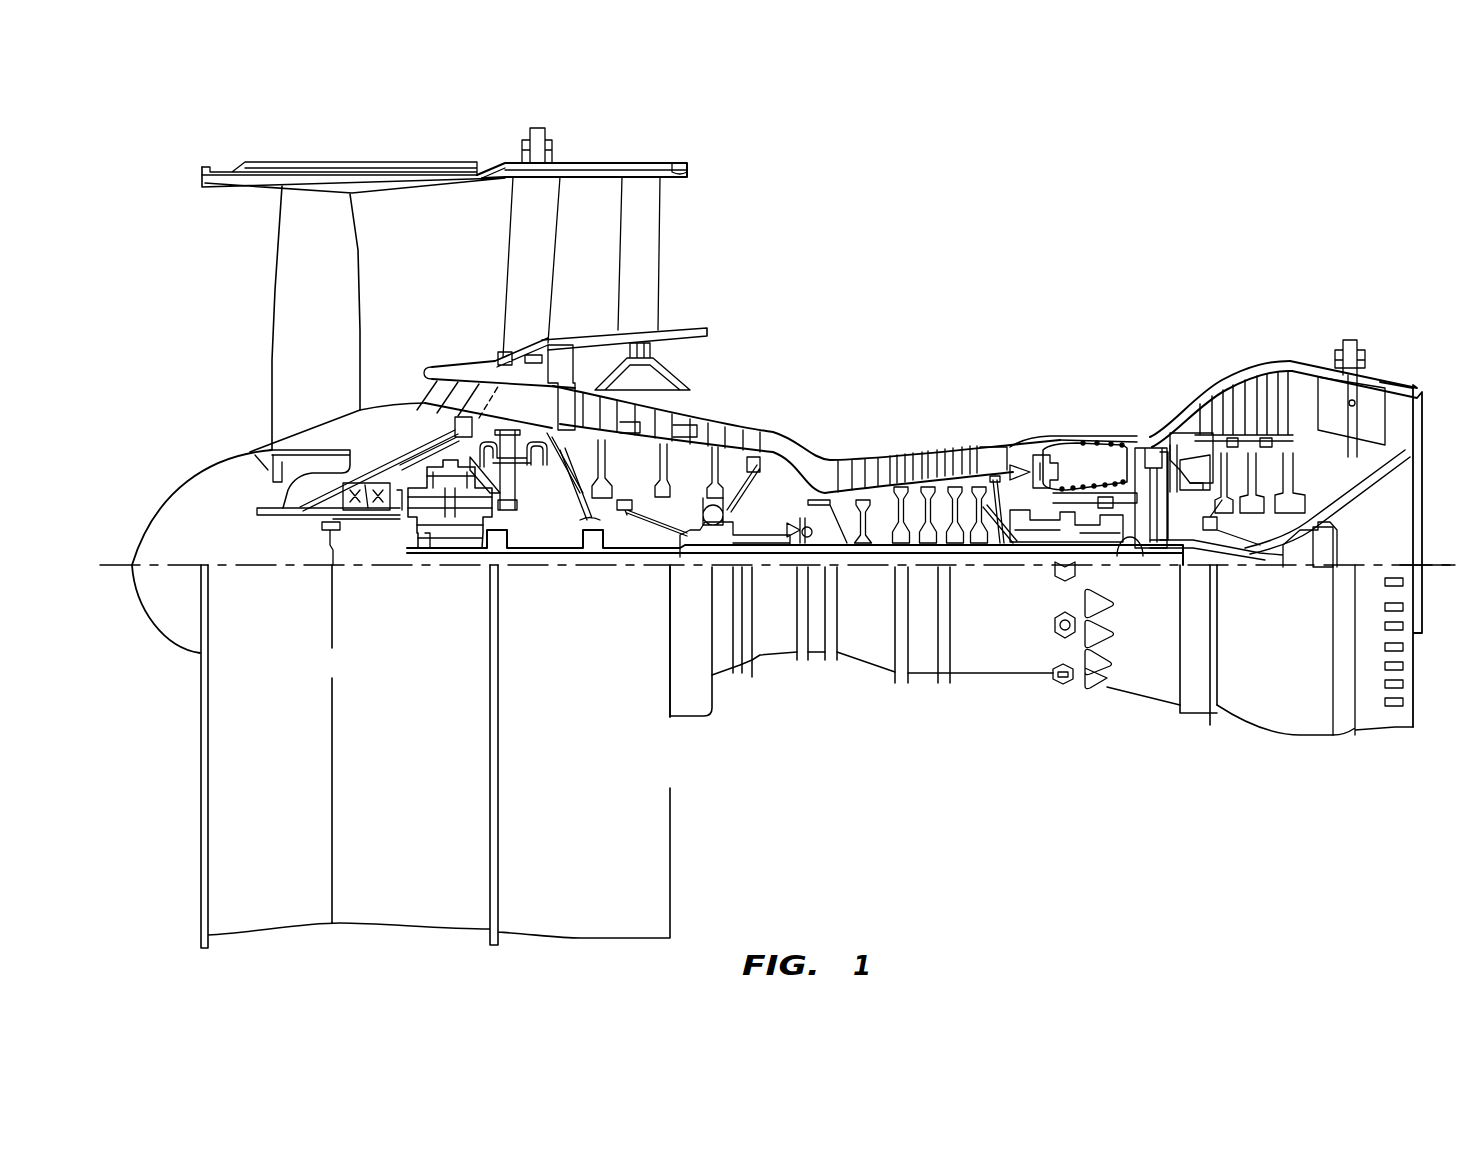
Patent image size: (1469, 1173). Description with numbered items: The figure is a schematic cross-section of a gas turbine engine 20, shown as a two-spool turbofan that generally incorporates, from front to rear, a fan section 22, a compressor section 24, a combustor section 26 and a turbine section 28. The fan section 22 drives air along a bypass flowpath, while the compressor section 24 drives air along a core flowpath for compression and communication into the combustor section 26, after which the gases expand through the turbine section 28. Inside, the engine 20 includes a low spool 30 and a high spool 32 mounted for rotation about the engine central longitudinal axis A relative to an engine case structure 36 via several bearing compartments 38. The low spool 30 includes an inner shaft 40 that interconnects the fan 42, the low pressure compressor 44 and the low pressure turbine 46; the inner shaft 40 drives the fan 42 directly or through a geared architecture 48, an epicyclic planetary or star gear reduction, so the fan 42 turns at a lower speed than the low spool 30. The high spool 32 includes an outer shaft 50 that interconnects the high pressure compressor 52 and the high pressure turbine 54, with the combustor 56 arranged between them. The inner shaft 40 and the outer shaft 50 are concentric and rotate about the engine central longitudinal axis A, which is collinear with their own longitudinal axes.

The gas turbine engine 20 is at (1300, 244).
The fan section 22 is at (198, 135).
The compressor section 24 is at (505, 306).
The combustor section 26 is at (1035, 306).
The turbine section 28 is at (1352, 306).
The low spool 30 is at (755, 520).
The high spool 32 is at (993, 477).
The engine case structure 36 is at (920, 680).
The bearing compartments 38 is at (527, 642).
The inner shaft 40 is at (1118, 553).
The fan 42 is at (262, 333).
The low pressure compressor 44 is at (688, 407).
The low pressure turbine 46 is at (1262, 393).
The geared architecture 48 is at (452, 517).
The outer shaft 50 is at (1143, 556).
The high pressure compressor 52 is at (845, 460).
The high pressure turbine 54 is at (1153, 456).
The combustor 56 is at (1088, 467).
The engine central longitudinal axis A is at (1442, 556).